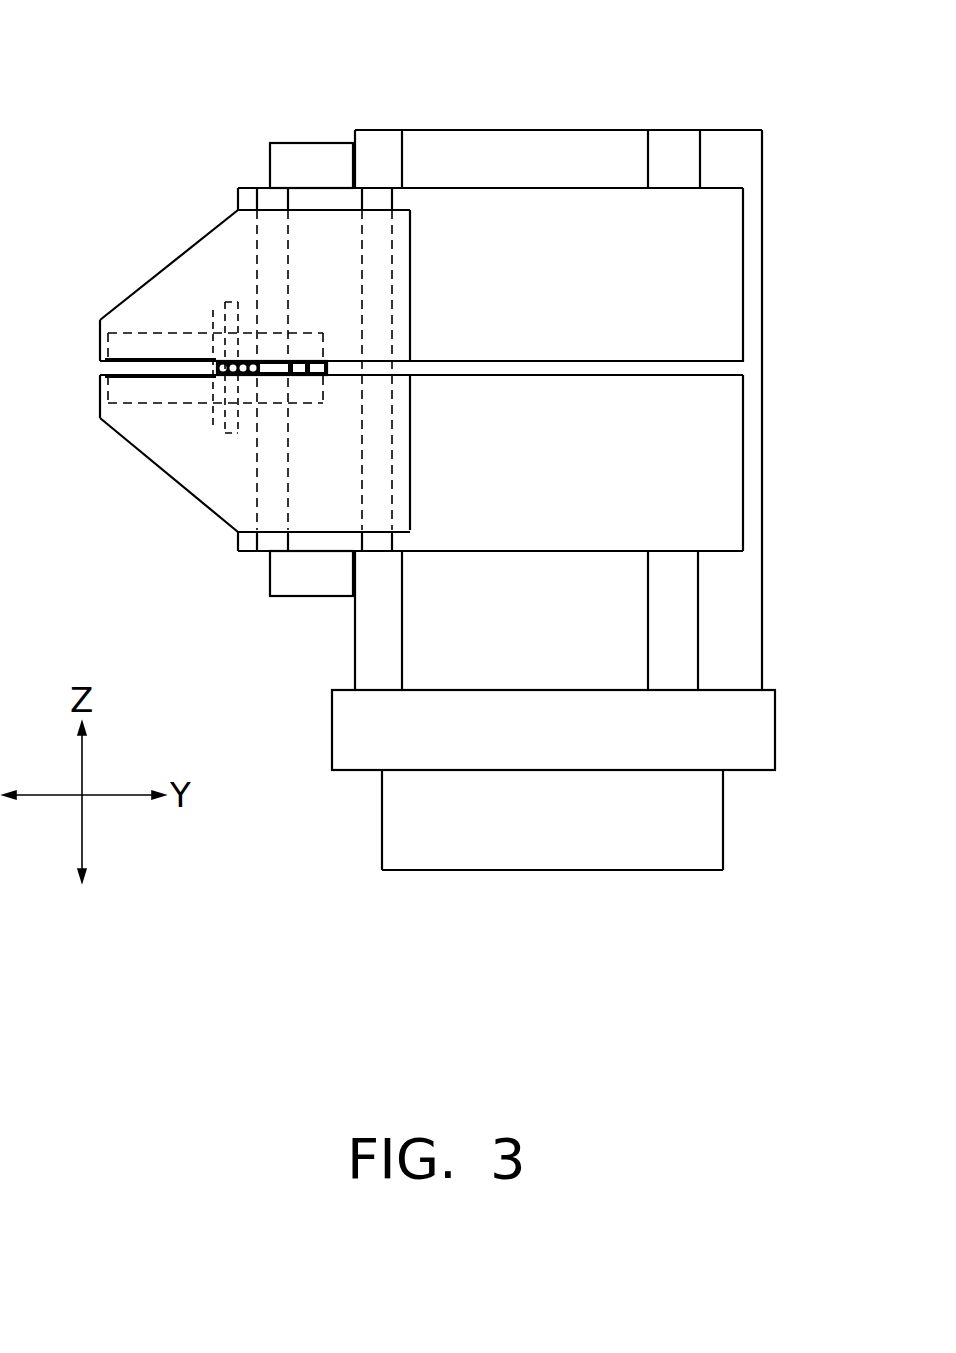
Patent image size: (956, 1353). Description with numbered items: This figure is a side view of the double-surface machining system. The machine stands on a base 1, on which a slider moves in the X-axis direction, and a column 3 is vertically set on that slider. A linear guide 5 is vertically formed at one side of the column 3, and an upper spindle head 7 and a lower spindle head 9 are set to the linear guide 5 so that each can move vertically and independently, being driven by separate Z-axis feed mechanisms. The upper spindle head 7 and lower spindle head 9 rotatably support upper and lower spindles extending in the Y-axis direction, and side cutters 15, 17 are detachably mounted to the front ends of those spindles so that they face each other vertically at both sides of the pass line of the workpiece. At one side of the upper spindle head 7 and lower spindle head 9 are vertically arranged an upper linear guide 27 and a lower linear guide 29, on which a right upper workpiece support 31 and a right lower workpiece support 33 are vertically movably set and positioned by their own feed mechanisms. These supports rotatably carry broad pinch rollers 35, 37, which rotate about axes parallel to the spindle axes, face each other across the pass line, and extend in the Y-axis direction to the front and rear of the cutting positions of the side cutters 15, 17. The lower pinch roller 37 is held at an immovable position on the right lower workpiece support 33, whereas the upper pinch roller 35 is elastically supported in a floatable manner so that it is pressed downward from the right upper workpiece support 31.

The base 1 is at (712, 832).
The column 3 is at (738, 629).
The linear guide 5 is at (382, 148).
The upper spindle head 7 is at (718, 290).
The lower spindle head 9 is at (718, 481).
The side cutter 15 is at (222, 300).
The side cutter 17 is at (228, 436).
The upper linear guide 27 is at (268, 197).
The lower linear guide 29 is at (383, 533).
The right upper workpiece support 31 is at (410, 293).
The right lower workpiece support 33 is at (576, 452).
The upper pinch roller 35 is at (155, 325).
The lower pinch roller 37 is at (130, 405).